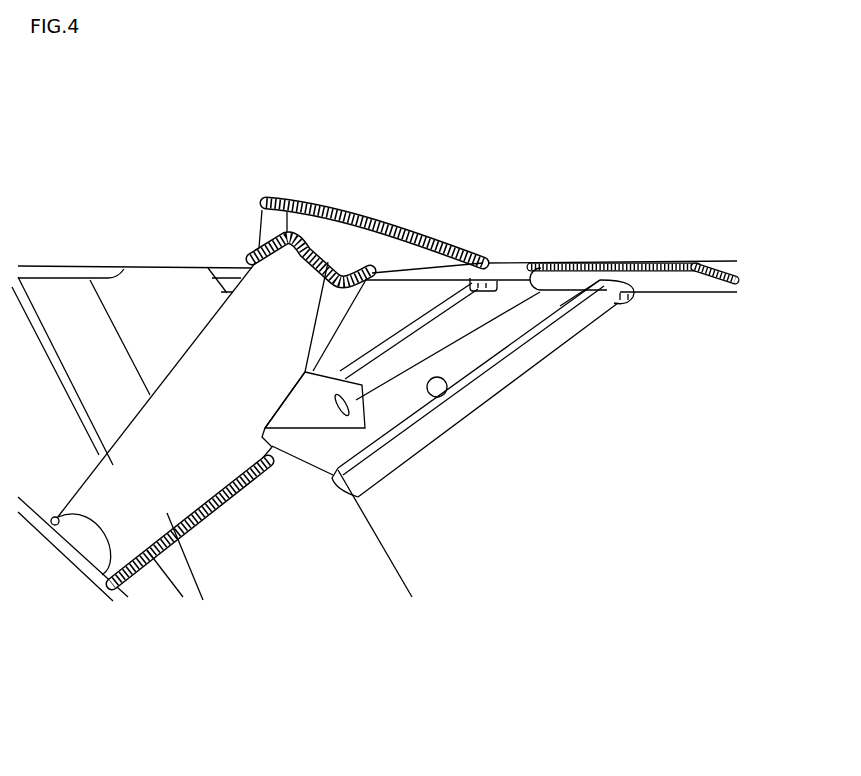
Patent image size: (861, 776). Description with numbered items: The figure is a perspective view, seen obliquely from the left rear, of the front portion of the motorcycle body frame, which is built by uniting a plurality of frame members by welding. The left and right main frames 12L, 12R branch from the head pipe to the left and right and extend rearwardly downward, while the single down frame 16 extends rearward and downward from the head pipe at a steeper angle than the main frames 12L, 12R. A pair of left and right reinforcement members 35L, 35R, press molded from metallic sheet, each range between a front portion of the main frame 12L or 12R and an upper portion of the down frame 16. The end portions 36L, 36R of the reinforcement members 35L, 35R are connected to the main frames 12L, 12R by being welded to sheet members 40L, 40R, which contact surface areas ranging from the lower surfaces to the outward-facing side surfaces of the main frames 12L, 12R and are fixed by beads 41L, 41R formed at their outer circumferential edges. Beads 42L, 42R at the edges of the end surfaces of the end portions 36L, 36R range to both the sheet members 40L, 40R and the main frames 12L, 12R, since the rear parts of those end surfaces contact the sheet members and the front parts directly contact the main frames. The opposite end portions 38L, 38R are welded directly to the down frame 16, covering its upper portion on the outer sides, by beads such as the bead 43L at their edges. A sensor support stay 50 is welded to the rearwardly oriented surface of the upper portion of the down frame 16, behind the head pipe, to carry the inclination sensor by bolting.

The left main frame 12L is at (194, 255).
The right main frame 12R is at (721, 268).
The down frame 16 is at (373, 578).
The left reinforcement member 35L is at (232, 441).
The right reinforcement member 35R is at (499, 408).
The end portion of left reinforcement member 36L is at (256, 254).
The end portion of right reinforcement member 36R is at (602, 308).
The end portion of left reinforcement member 38L is at (170, 545).
The end portion of right reinforcement member 38R is at (362, 485).
The left sheet member 40L is at (347, 243).
The right sheet member 40R is at (650, 262).
The bead 41L is at (406, 240).
The bead 41R is at (716, 262).
The bead 42L is at (287, 202).
The bead 42R is at (627, 302).
The bead 43L is at (207, 505).
The sensor support stay 50 is at (313, 403).